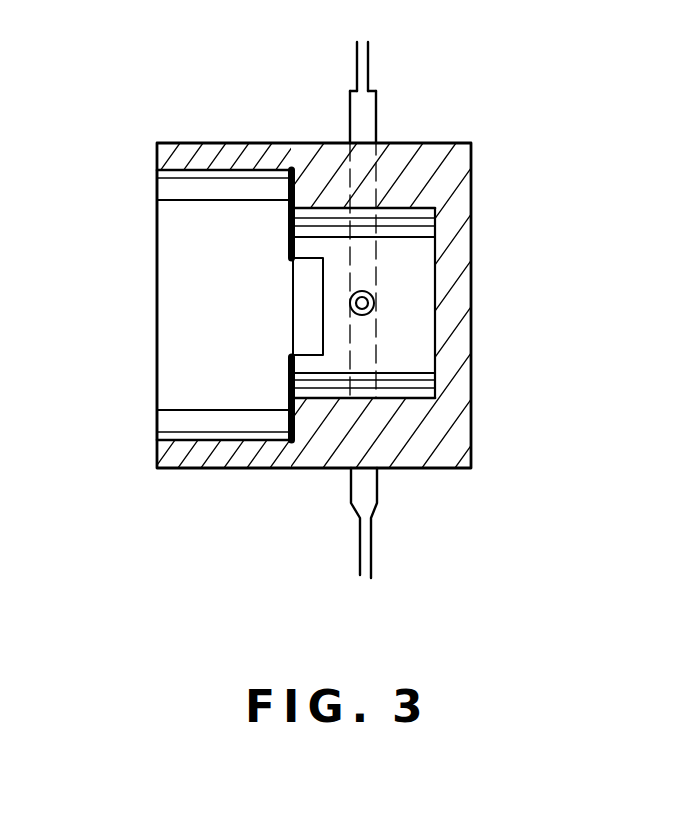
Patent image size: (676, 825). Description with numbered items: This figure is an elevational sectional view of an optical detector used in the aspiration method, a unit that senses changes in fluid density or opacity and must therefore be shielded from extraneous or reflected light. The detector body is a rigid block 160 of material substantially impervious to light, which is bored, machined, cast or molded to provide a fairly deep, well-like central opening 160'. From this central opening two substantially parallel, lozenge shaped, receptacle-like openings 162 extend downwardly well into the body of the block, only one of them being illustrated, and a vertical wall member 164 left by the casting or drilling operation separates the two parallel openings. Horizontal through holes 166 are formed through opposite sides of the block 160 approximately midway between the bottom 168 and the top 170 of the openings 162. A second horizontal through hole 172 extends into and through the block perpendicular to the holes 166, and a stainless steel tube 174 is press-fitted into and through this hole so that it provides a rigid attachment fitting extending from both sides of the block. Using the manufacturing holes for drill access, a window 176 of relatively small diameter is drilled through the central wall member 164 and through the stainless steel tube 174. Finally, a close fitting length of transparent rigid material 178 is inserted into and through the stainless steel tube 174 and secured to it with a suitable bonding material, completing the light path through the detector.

The rigid block 160 is at (176, 356).
The central opening 160' is at (120, 305).
The receptacle-like openings 162 is at (427, 232).
The vertical wall member 164 is at (313, 245).
The horizontal through holes 166 is at (372, 166).
The bottom 168 is at (472, 403).
The top 170 is at (287, 425).
The second horizontal through hole 172 is at (370, 308).
The stainless steel tube 174 is at (349, 123).
The window 176 is at (376, 302).
The transparent rigid material 178 is at (368, 58).